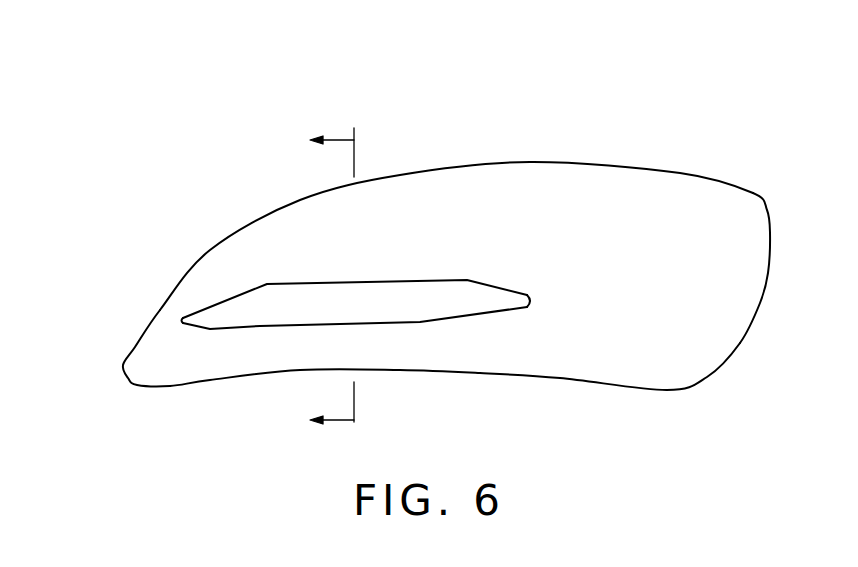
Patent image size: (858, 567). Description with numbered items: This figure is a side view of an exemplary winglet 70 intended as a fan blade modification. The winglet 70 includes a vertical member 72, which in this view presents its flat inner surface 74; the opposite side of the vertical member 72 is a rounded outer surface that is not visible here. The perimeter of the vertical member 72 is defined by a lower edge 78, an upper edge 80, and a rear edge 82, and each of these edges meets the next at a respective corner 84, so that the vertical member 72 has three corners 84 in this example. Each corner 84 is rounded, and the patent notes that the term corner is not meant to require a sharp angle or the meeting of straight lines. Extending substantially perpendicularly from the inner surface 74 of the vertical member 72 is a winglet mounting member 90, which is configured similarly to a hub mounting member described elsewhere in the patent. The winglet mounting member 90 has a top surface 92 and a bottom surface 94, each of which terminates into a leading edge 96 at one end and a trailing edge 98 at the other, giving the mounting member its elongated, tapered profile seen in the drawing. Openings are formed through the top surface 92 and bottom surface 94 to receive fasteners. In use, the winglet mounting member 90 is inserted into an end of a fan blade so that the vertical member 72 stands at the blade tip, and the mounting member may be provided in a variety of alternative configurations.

The winglet 70 is at (180, 108).
The vertical member 72 is at (500, 183).
The inner surface 74 is at (641, 257).
The lower edge 78 is at (478, 375).
The upper edge 80 is at (593, 160).
The rear edge 82 is at (760, 307).
The corner 84 is at (765, 203).
The winglet mounting member 90 is at (356, 304).
The top surface 92 is at (412, 280).
The bottom surface 94 is at (370, 325).
The leading edge 96 is at (183, 319).
The trailing edge 98 is at (532, 298).